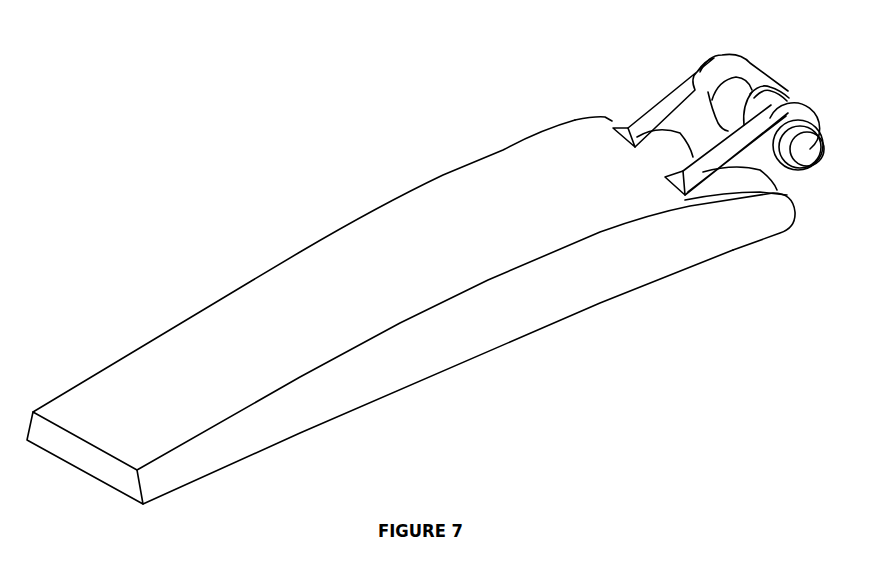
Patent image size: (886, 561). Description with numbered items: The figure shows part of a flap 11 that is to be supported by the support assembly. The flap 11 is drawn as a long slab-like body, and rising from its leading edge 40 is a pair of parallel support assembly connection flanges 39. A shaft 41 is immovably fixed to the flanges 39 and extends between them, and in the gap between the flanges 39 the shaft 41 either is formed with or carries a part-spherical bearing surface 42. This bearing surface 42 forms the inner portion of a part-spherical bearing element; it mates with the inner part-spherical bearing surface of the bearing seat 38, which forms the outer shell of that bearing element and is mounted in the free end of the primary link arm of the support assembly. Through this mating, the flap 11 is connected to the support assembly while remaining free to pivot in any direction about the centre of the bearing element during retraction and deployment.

The flap 11 is at (344, 251).
The bearing seat 38 is at (749, 90).
The support assembly connection flanges 39 is at (693, 113).
The leading edge 40 is at (623, 118).
The shaft 41 is at (808, 151).
The part-spherical bearing surface 42 is at (789, 91).